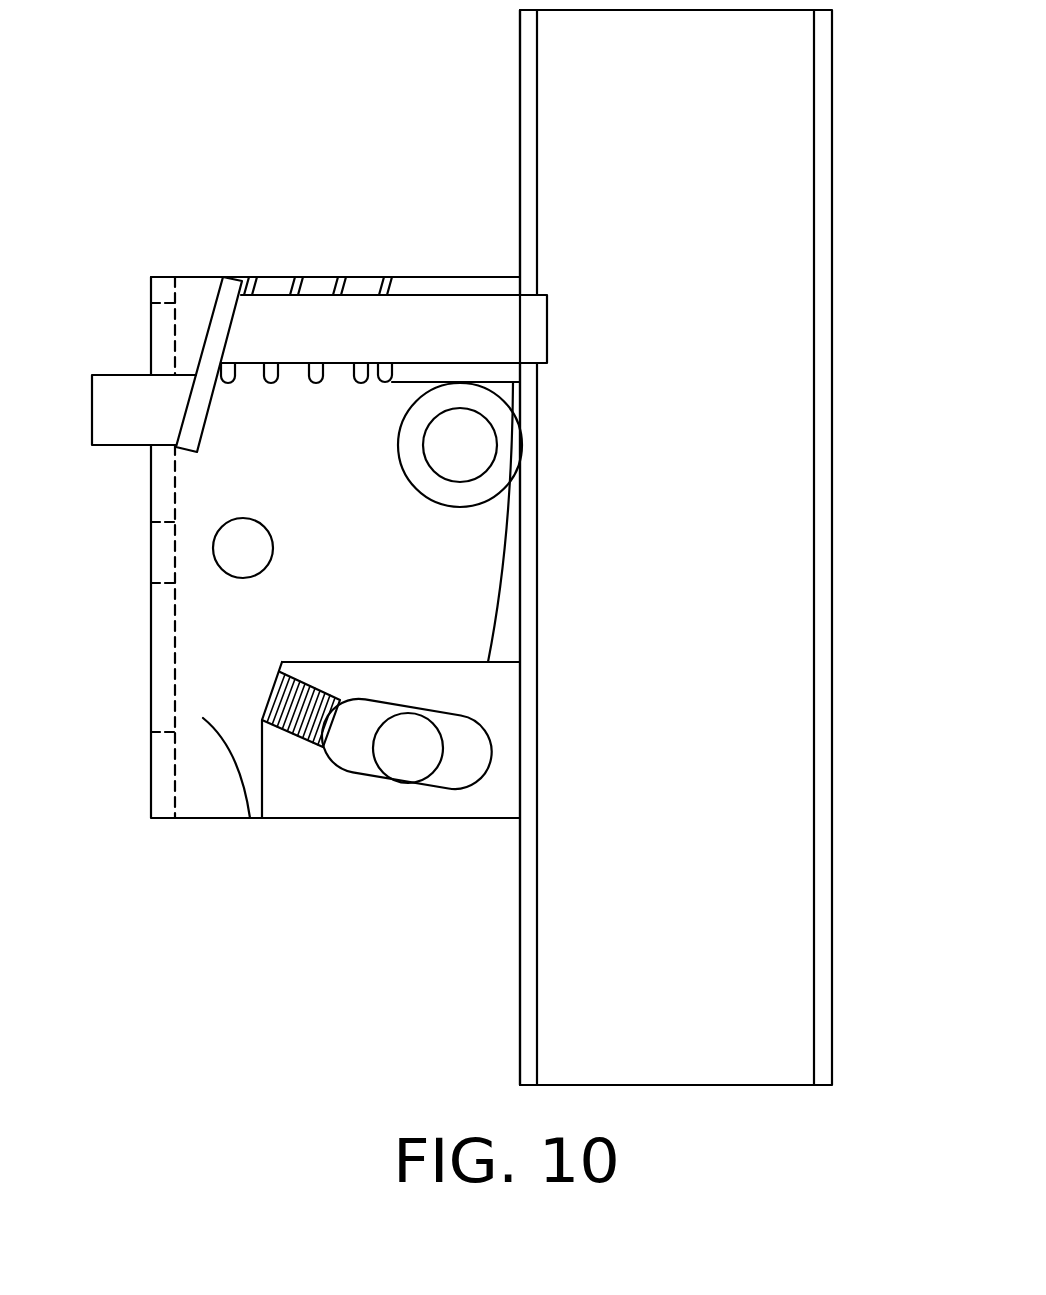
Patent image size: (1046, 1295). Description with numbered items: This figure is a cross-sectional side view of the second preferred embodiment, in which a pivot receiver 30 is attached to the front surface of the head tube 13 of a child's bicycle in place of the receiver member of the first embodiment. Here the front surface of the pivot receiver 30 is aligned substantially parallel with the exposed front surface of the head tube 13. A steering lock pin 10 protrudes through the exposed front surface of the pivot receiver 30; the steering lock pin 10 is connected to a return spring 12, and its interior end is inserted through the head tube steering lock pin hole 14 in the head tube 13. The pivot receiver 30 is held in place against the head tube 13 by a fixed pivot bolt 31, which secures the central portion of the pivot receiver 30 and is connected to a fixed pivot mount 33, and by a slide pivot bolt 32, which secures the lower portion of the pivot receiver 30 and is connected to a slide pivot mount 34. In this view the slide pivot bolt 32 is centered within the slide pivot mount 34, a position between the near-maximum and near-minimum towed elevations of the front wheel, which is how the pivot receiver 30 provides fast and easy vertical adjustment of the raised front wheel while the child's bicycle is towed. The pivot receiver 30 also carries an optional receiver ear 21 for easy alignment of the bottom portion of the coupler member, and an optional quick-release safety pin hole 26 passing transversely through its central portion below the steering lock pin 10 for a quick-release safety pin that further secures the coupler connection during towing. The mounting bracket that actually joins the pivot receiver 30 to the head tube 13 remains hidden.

The steering lock pin 10 is at (122, 408).
The return spring 12 is at (293, 277).
The head tube 13 is at (523, 130).
The head tube steering lock pin hole 14 is at (418, 285).
The receiver ear 21 is at (203, 793).
The quick-release safety pin hole 26 is at (230, 553).
The pivot receiver 30 is at (425, 579).
The fixed pivot bolt 31 is at (478, 437).
The slide pivot bolt 32 is at (409, 762).
The fixed pivot mount 33 is at (495, 480).
The slide pivot mount 34 is at (323, 793).